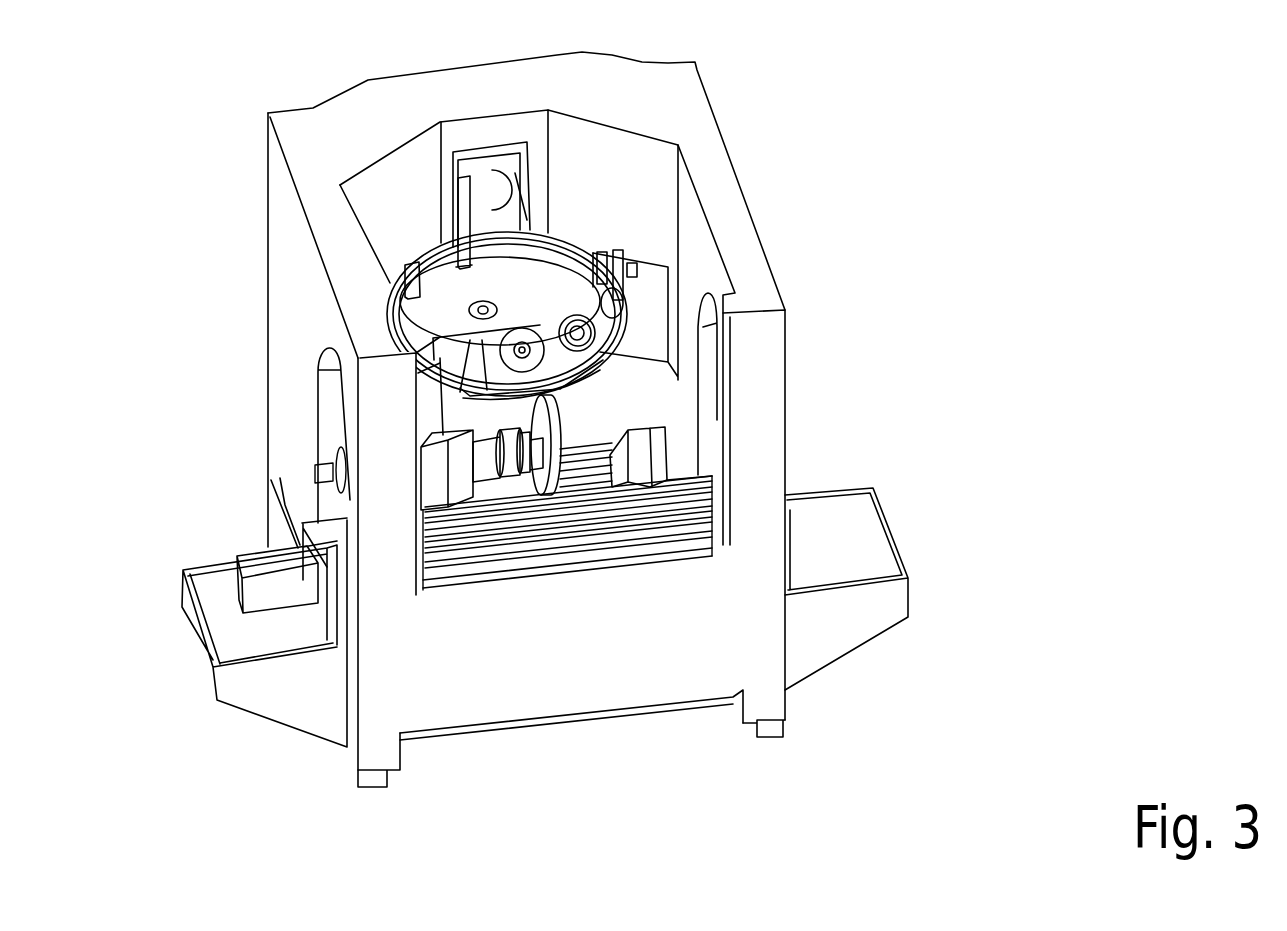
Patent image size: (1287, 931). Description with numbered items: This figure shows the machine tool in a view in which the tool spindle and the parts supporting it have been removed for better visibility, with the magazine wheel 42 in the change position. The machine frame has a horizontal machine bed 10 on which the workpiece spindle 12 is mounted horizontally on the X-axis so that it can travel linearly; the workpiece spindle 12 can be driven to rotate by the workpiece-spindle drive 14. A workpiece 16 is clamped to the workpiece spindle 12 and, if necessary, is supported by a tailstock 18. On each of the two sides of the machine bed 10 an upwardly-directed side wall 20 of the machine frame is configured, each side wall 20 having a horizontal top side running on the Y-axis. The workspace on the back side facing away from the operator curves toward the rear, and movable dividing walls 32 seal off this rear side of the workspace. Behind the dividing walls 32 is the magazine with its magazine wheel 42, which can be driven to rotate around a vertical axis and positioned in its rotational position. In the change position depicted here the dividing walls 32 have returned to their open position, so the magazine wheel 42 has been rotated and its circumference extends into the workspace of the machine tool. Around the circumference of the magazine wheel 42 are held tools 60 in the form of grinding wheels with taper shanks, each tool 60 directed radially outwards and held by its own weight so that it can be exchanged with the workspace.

The machine bed 10 is at (828, 613).
The workpiece spindle 12 is at (493, 452).
The workpiece-spindle drive 14 is at (437, 478).
The workpiece 16 is at (545, 470).
The tailstock 18 is at (647, 455).
The side wall 20 is at (298, 320).
The dividing walls 32 is at (590, 395).
The magazine wheel 42 is at (540, 262).
The tool 60 is at (617, 253).